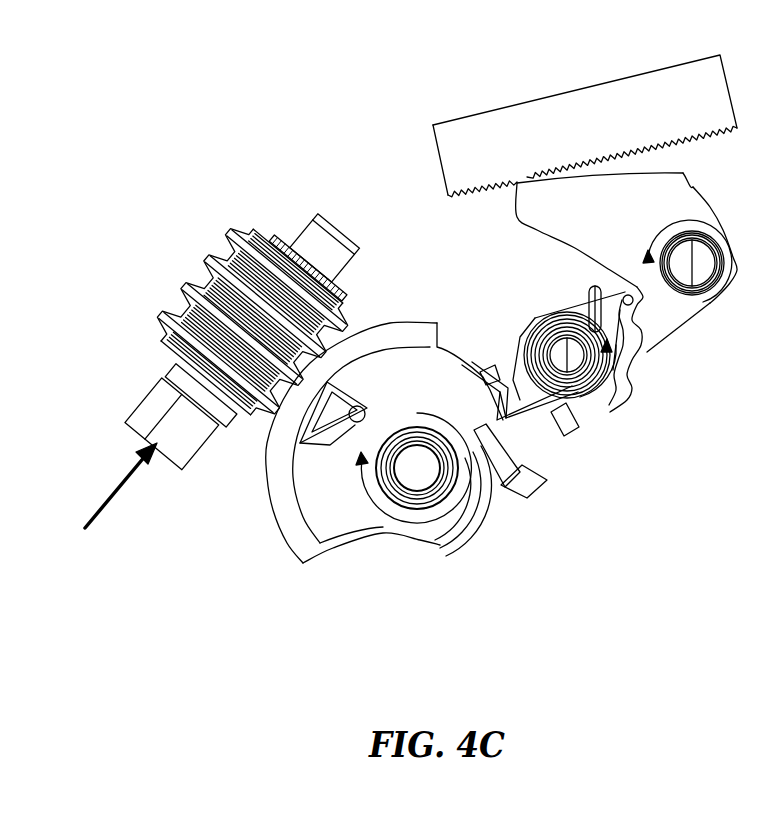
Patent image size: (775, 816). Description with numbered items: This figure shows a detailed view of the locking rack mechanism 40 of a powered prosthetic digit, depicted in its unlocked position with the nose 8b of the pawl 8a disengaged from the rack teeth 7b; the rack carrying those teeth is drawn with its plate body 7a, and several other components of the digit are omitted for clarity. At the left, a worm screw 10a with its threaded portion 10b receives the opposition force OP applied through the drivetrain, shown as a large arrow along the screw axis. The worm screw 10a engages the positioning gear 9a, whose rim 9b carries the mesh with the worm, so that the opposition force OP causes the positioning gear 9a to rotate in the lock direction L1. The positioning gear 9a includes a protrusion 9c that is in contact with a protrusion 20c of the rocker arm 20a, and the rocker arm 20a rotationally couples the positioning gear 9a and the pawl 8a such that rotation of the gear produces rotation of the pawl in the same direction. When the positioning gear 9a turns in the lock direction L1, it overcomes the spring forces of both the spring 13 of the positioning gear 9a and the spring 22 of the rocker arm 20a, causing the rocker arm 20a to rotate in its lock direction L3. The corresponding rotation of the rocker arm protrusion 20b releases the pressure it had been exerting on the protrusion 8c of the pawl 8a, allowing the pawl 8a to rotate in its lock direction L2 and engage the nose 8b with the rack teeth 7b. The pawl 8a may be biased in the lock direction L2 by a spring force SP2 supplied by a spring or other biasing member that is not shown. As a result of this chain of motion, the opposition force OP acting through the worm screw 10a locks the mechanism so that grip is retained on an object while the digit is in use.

The locking rack mechanism 40 is at (333, 110).
The plate body 7a is at (523, 120).
The rack teeth 7b is at (497, 182).
The pawl 8a is at (688, 188).
The nose 8b is at (523, 187).
The protrusion 8c is at (628, 365).
The lock direction L2 is at (710, 303).
The spring force SP2 is at (692, 324).
The rocker arm 20a is at (577, 303).
The rocker arm protrusion 20b is at (627, 297).
The protrusion 20c is at (505, 415).
The protrusion 9c is at (487, 370).
The lock direction L3 is at (612, 378).
The positioning gear 9a is at (357, 527).
The sector gear rim 9b is at (283, 535).
The lock direction L1 is at (420, 527).
The spring 13 is at (530, 487).
The spring 22 is at (572, 430).
The worm screw 10a is at (170, 347).
The worm threads 10b is at (183, 288).
The opposition force OP is at (118, 503).